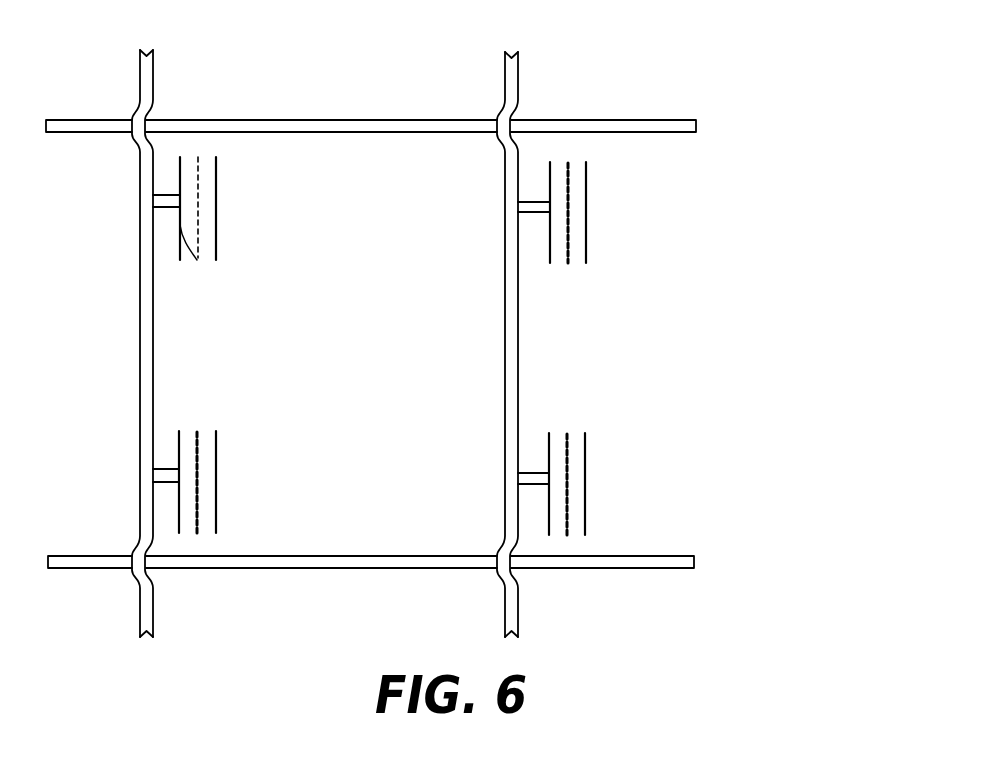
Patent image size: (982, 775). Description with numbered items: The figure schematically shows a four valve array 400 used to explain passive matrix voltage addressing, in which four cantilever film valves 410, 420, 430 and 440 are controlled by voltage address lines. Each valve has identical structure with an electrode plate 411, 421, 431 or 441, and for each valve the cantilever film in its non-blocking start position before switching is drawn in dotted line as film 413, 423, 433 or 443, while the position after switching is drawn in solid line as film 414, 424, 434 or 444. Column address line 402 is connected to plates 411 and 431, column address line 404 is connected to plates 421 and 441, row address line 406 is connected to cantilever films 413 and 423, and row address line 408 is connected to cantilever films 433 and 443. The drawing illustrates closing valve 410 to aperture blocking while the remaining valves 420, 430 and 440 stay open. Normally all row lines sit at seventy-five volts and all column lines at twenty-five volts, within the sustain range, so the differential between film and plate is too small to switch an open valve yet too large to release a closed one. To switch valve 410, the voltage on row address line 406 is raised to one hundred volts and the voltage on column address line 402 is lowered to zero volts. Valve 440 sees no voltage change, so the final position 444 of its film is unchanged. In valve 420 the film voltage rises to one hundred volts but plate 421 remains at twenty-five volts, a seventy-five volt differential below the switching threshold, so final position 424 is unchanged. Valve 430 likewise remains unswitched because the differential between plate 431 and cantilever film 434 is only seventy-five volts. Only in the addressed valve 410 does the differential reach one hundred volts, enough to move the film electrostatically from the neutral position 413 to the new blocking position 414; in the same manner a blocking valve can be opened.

The four valve array 400 is at (743, 133).
The address line 402 is at (147, 70).
The address line 404 is at (515, 77).
The address line 406 is at (413, 121).
The address line 408 is at (344, 556).
The cantilever film valve 410 is at (294, 194).
The electrode plate 411 is at (178, 238).
The cantilever film 413 is at (198, 156).
The cantilever film 414 is at (197, 260).
The cantilever film valve 420 is at (668, 197).
The electrode plate 421 is at (548, 243).
The cantilever film 423 is at (568, 260).
The cantilever film 424 is at (566, 162).
The cantilever film valve 430 is at (304, 507).
The electrode plate 431 is at (176, 513).
The cantilever film 433 is at (198, 531).
The cantilever film 434 is at (195, 430).
The cantilever film valve 440 is at (676, 509).
The electrode plate 441 is at (547, 515).
The cantilever film 443 is at (568, 532).
The cantilever film 444 is at (565, 432).